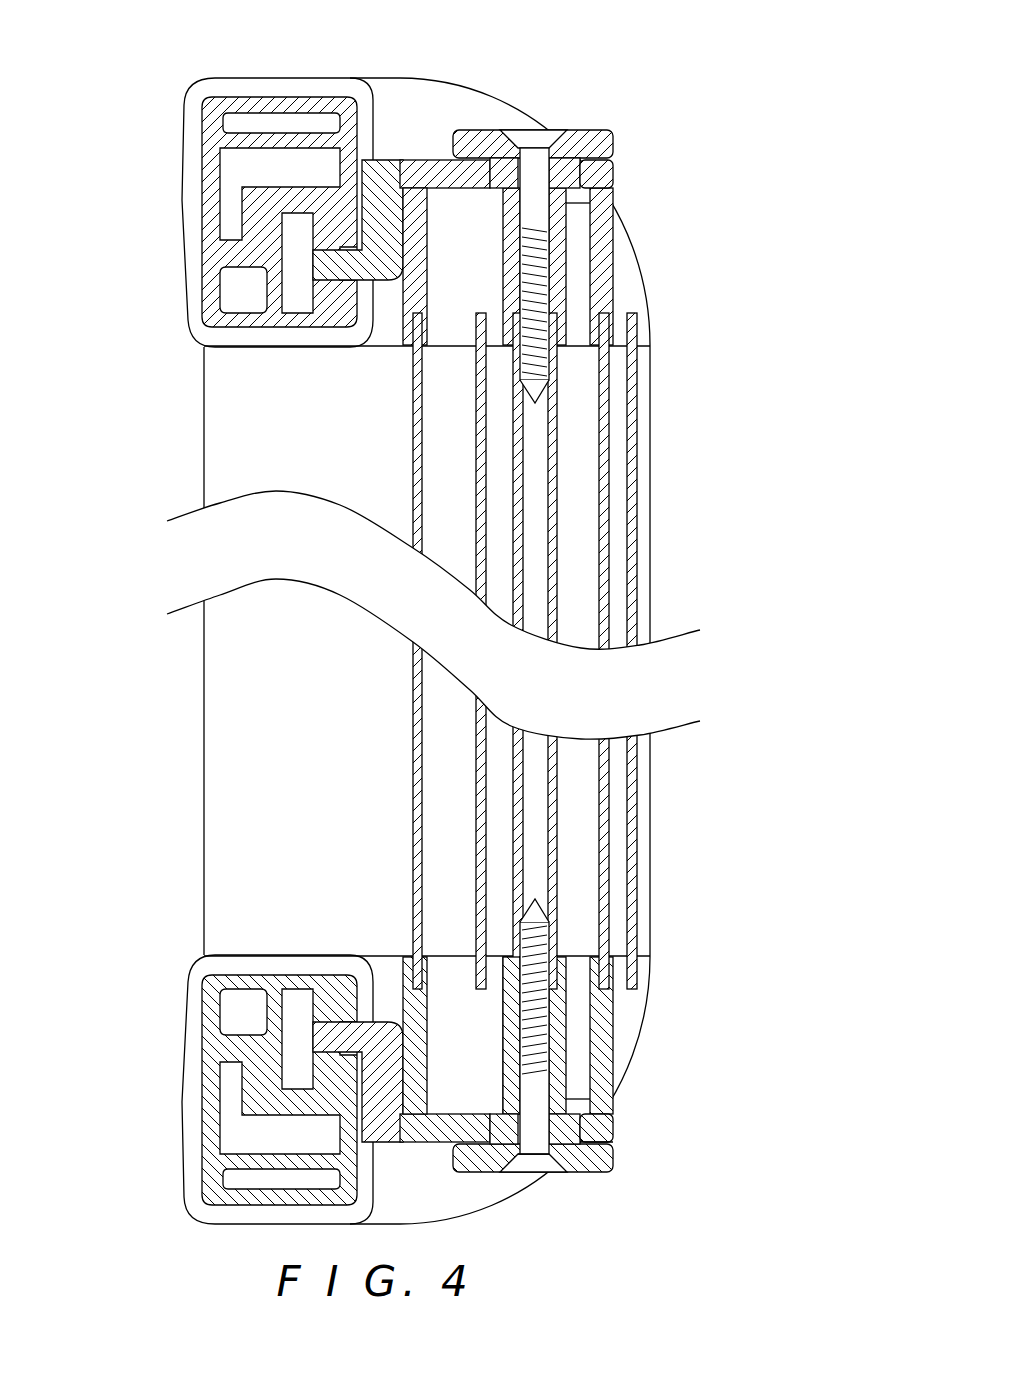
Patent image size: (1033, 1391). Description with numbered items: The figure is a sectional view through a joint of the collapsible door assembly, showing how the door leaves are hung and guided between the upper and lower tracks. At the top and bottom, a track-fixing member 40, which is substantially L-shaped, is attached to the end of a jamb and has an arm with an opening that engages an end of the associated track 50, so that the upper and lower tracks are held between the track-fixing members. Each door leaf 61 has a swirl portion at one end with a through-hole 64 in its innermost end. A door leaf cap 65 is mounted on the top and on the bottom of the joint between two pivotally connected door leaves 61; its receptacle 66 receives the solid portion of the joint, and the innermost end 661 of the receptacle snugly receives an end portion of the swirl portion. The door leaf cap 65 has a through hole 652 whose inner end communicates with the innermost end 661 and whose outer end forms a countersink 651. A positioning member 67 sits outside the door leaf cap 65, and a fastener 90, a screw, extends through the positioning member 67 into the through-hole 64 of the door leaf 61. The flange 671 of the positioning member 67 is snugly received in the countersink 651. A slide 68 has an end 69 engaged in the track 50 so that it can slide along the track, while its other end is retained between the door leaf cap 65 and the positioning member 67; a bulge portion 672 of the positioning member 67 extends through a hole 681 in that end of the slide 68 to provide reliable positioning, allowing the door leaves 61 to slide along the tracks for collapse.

The track-fixing member 40 is at (208, 84).
The track 50 is at (205, 150).
The end of slide 69 is at (248, 212).
The door leaf cap 65 is at (608, 290).
The through-hole 64 is at (538, 758).
The countersink 651 is at (566, 204).
The door leaf 61 is at (613, 490).
The innermost end of receptacle 661 is at (518, 988).
The receptacle 66 is at (605, 965).
The through hole 652 is at (515, 1053).
The positioning member 67 is at (592, 130).
The flange 671 is at (507, 1127).
The slide 68 is at (615, 166).
The hole 681 is at (613, 1140).
The fastener 90 is at (540, 128).
The bulge portion 672 is at (530, 1173).